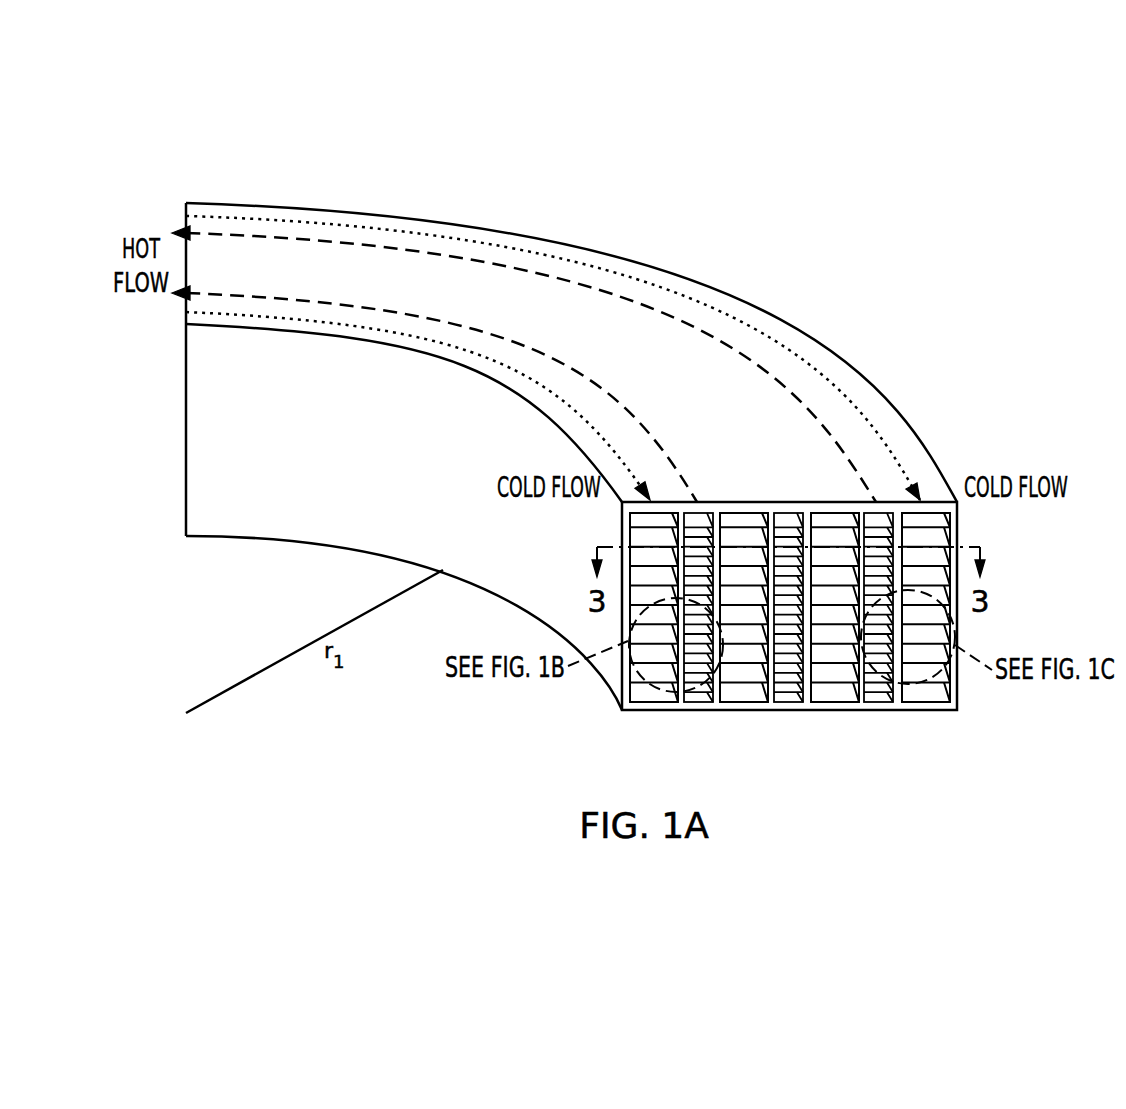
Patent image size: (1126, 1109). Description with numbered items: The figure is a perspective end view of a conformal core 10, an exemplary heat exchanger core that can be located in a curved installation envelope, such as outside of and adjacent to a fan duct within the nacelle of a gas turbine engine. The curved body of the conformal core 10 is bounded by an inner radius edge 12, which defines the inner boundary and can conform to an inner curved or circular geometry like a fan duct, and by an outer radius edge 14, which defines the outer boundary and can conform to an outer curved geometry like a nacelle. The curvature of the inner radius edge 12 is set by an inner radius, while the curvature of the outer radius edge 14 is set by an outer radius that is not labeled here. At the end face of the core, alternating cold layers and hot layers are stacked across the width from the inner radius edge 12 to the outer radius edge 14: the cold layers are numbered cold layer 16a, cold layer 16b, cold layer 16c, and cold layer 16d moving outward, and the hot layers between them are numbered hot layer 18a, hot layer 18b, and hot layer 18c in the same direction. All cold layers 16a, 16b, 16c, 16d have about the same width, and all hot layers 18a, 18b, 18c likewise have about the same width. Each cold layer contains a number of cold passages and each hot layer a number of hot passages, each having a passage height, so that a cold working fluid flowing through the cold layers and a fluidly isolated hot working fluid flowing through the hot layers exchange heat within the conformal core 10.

The conformal core 10 is at (190, 138).
The inner radius edge 12 is at (312, 553).
The outer radius edge 14 is at (692, 268).
The cold layer 16a is at (653, 700).
The cold layer 16b is at (743, 700).
The cold layer 16c is at (835, 700).
The cold layer 16d is at (925, 700).
The hot layer 18a is at (700, 700).
The hot layer 18b is at (790, 700).
The hot layer 18c is at (880, 700).